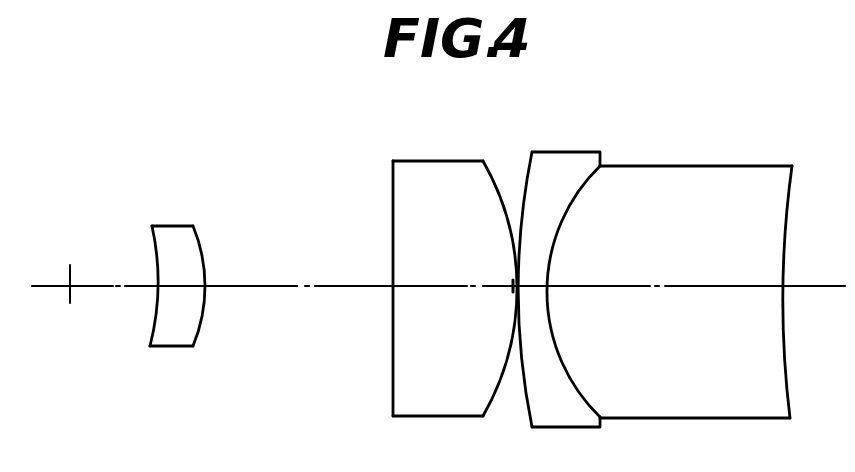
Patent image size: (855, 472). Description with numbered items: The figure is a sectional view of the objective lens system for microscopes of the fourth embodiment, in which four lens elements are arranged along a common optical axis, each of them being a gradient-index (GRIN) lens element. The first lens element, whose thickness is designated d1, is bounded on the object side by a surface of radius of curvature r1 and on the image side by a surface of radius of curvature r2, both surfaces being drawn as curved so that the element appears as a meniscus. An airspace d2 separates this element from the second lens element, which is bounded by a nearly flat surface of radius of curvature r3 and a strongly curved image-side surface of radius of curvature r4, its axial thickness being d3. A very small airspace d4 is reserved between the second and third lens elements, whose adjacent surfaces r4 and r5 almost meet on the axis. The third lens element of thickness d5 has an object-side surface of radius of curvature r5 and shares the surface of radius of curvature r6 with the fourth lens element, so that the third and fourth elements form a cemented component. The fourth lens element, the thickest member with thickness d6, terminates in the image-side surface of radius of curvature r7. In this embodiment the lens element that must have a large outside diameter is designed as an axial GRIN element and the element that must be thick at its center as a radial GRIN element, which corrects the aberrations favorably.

The radius of curvature of first lens surface r1 is at (153, 248).
The radius of curvature of second lens surface r2 is at (202, 242).
The radius of curvature of third lens surface r3 is at (392, 200).
The radius of curvature of fourth lens surface r4 is at (494, 180).
The radius of curvature of fifth lens surface r5 is at (527, 182).
The radius of curvature of sixth lens surface r6 is at (582, 190).
The radius of curvature of seventh lens surface r7 is at (791, 191).
The thickness of first lens element d1 is at (180, 287).
The airspace between first and second lens elements d2 is at (278, 288).
The thickness of second lens element d3 is at (433, 288).
The airspace between second and third lens elements d4 is at (512, 294).
The thickness of third lens element d5 is at (533, 290).
The thickness of fourth lens element d6 is at (683, 290).